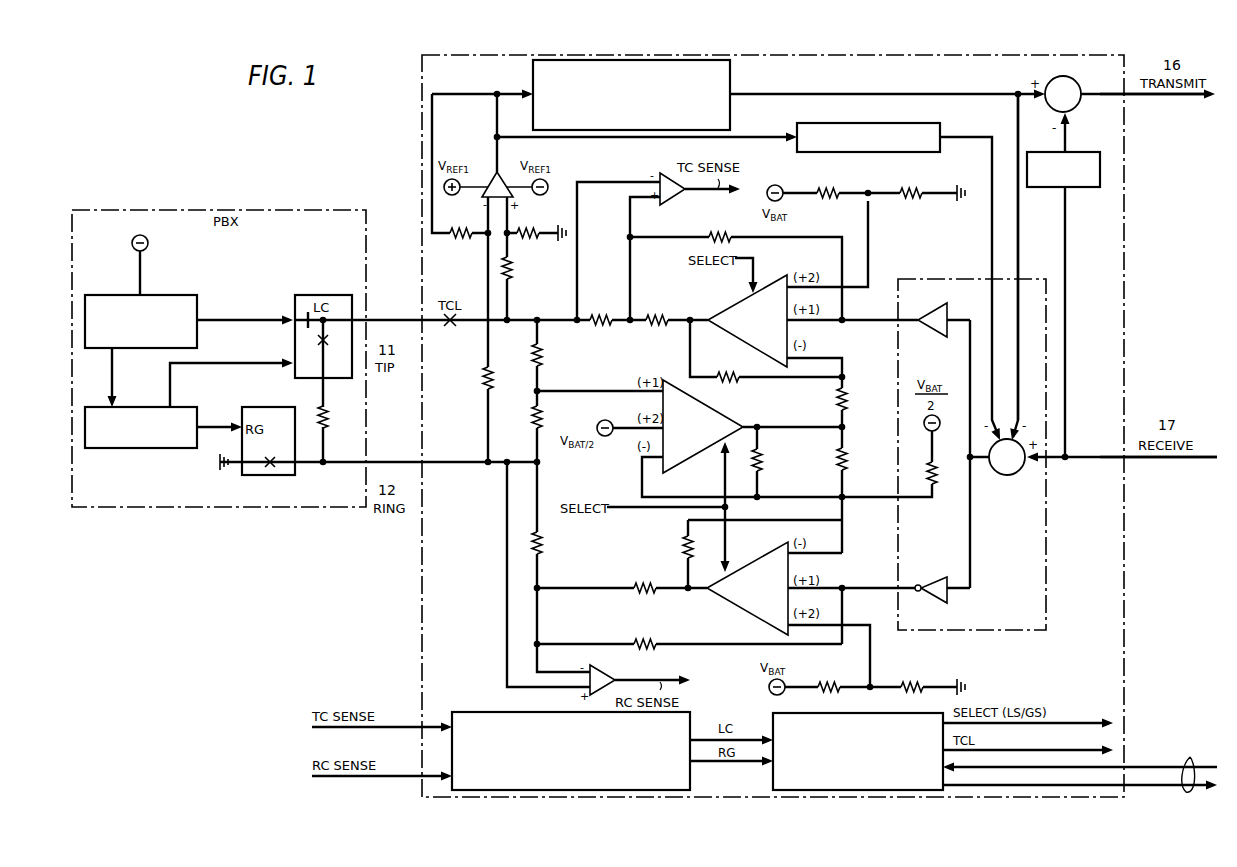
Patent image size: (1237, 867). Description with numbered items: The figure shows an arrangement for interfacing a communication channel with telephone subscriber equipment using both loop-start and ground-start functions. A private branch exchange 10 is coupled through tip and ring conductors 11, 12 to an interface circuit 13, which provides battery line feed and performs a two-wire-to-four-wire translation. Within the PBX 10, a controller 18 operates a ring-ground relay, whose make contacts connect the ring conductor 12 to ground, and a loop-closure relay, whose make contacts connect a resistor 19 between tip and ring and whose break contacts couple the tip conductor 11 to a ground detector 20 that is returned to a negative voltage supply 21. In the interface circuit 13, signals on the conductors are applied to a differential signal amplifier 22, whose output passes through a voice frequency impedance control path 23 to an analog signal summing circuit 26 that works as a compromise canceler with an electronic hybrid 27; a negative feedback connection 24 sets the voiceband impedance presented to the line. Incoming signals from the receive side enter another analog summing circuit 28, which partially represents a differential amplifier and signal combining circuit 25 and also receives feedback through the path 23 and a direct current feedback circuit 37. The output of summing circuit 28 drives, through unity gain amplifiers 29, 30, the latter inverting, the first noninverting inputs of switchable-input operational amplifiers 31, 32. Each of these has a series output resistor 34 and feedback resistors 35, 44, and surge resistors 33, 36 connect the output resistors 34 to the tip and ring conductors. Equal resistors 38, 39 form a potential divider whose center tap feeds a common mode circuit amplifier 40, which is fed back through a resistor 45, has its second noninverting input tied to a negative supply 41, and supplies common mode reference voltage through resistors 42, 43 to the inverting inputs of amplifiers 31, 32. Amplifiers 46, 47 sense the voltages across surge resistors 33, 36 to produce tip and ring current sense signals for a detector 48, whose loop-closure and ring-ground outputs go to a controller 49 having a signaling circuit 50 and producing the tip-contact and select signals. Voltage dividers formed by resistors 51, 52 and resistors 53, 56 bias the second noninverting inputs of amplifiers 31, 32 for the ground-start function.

The private branch exchange 10 is at (344, 210).
The tip conductor 11 is at (385, 338).
The ring conductor 12 is at (385, 480).
The interface circuit 13 is at (421, 85).
The controller 18 is at (182, 407).
The resistor 19 is at (334, 417).
The ground detector 20 is at (177, 296).
The negative voltage supply 21 is at (150, 259).
The differential signal amplifier 22 is at (480, 193).
The voice frequency impedance control path 23 is at (733, 64).
The negative feedback connection 24 is at (1019, 263).
The differential amplifier and signal combining circuit 25 is at (918, 279).
The analog signal summing circuit 26 is at (1070, 81).
The electronic hybrid 27 is at (1075, 153).
The analog summing circuit 28 is at (1007, 467).
The unity gain amplifier 29 is at (932, 316).
The unity gain amplifier 30 is at (931, 584).
The switchable-input operational amplifier 31 is at (725, 311).
The switchable-input operational amplifier 32 is at (742, 601).
The surge resistor 33 is at (601, 310).
The series output resistor 34 is at (651, 444).
The feedback resistor 35 is at (682, 431).
The surge resistor 36 is at (548, 543).
The direct current feedback circuit 37 is at (916, 124).
The resistor 38 is at (548, 355).
The resistor 39 is at (548, 417).
The common mode circuit amplifier 40 is at (730, 419).
The negative supply 41 is at (590, 437).
The resistor 42 is at (852, 399).
The resistor 43 is at (852, 459).
The feedback resistor 44 is at (701, 455).
The resistor 45 is at (768, 460).
The amplifier 46 is at (675, 194).
The amplifier 47 is at (607, 676).
The detector 48 is at (476, 711).
The controller 49 is at (772, 714).
The signaling circuit 50 is at (1189, 766).
The resistor 51 is at (803, 185).
The resistor 52 is at (911, 184).
The resistor 53 is at (804, 679).
The resistor 56 is at (912, 677).